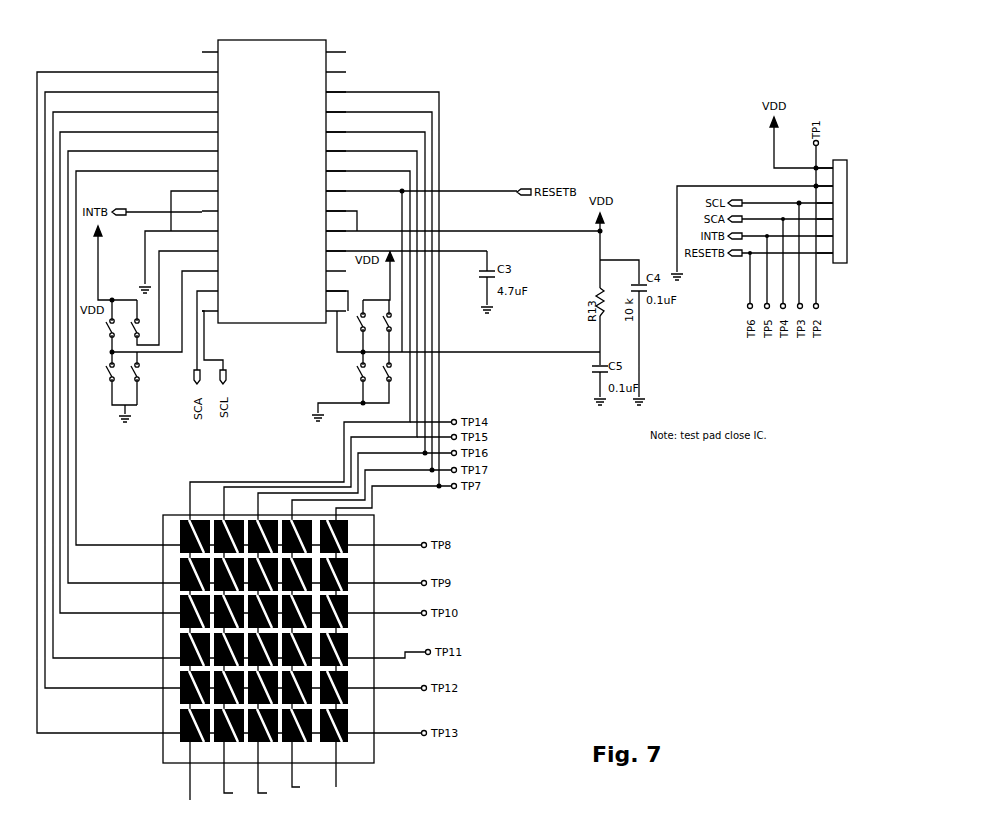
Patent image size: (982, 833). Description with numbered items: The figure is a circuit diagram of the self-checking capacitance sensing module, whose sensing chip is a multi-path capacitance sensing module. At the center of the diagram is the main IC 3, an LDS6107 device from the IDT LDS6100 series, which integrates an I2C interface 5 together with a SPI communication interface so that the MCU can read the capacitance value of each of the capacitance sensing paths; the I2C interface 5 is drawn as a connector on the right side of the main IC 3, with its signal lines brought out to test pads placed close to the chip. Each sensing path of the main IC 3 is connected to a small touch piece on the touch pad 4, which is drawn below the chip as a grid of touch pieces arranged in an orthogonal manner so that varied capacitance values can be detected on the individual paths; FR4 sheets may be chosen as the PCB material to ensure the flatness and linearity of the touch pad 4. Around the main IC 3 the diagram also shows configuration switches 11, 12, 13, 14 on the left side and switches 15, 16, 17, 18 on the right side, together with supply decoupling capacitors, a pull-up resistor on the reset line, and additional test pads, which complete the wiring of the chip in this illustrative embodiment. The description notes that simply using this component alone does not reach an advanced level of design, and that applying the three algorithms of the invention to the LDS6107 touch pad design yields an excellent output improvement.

The main IC 3 is at (319, 41).
The touch pad 4 is at (358, 536).
The I2C interface 5 is at (843, 281).
The switch 11 is at (129, 332).
The switch 12 is at (145, 373).
The switch 13 is at (104, 332).
The switch 14 is at (104, 377).
The switch 15 is at (382, 327).
The switch 16 is at (382, 378).
The switch 17 is at (356, 327).
The switch 18 is at (356, 378).